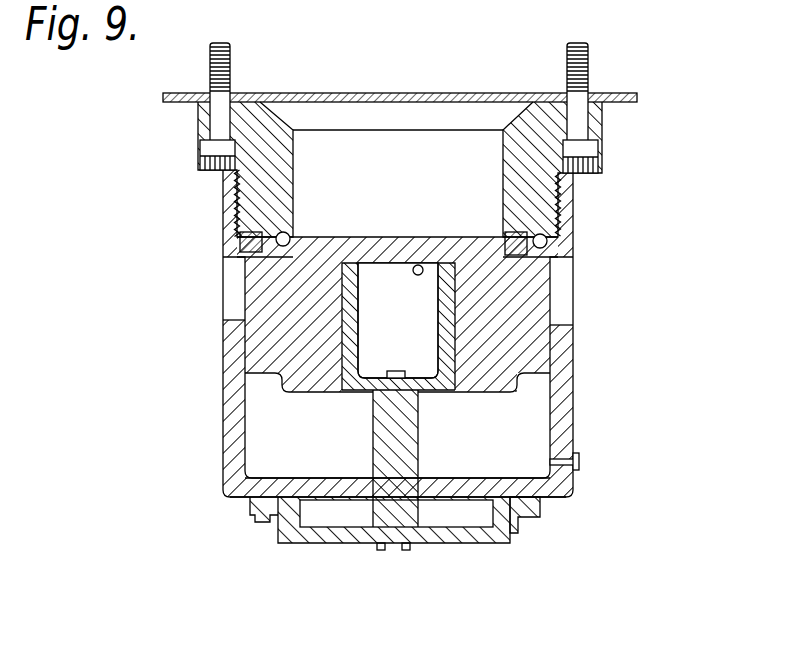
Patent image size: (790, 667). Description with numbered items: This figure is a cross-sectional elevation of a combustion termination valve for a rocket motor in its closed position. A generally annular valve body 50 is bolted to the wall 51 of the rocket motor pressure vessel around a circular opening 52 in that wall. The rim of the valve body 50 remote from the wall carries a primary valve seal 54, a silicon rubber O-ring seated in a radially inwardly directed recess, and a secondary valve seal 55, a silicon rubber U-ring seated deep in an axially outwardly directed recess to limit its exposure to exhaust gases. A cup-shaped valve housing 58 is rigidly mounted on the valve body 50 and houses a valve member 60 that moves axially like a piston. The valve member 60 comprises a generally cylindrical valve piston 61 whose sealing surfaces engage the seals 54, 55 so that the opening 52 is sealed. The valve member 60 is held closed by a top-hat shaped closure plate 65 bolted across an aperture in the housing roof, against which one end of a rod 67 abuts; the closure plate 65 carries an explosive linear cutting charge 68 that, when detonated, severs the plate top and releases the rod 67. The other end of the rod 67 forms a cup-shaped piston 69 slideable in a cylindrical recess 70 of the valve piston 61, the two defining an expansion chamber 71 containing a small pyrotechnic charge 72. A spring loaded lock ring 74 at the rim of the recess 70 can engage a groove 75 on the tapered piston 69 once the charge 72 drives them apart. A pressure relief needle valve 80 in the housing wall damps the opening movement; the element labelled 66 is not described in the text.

The valve body 50 is at (281, 182).
The wall of the pressure vessel 51 is at (622, 95).
The circular opening 52 is at (265, 99).
The primary valve seal 54 is at (295, 231).
The secondary valve seal 55 is at (567, 212).
The valve housing 58 is at (233, 447).
The valve member 60 is at (337, 406).
The valve piston 61 is at (537, 315).
The closure plate 65 is at (338, 538).
The bottom wall 66 is at (420, 480).
The rod 67 is at (402, 443).
The explosive linear cutting charge 68 is at (272, 532).
The cup-shaped piston 69 is at (362, 344).
The cylindrical recess 70 is at (422, 265).
The expansion chamber 71 is at (383, 306).
The pyrotechnic charge 72 is at (401, 368).
The spring loaded lock ring 74 is at (460, 377).
The groove 75 is at (456, 288).
The pressure relief needle valve 80 is at (580, 459).